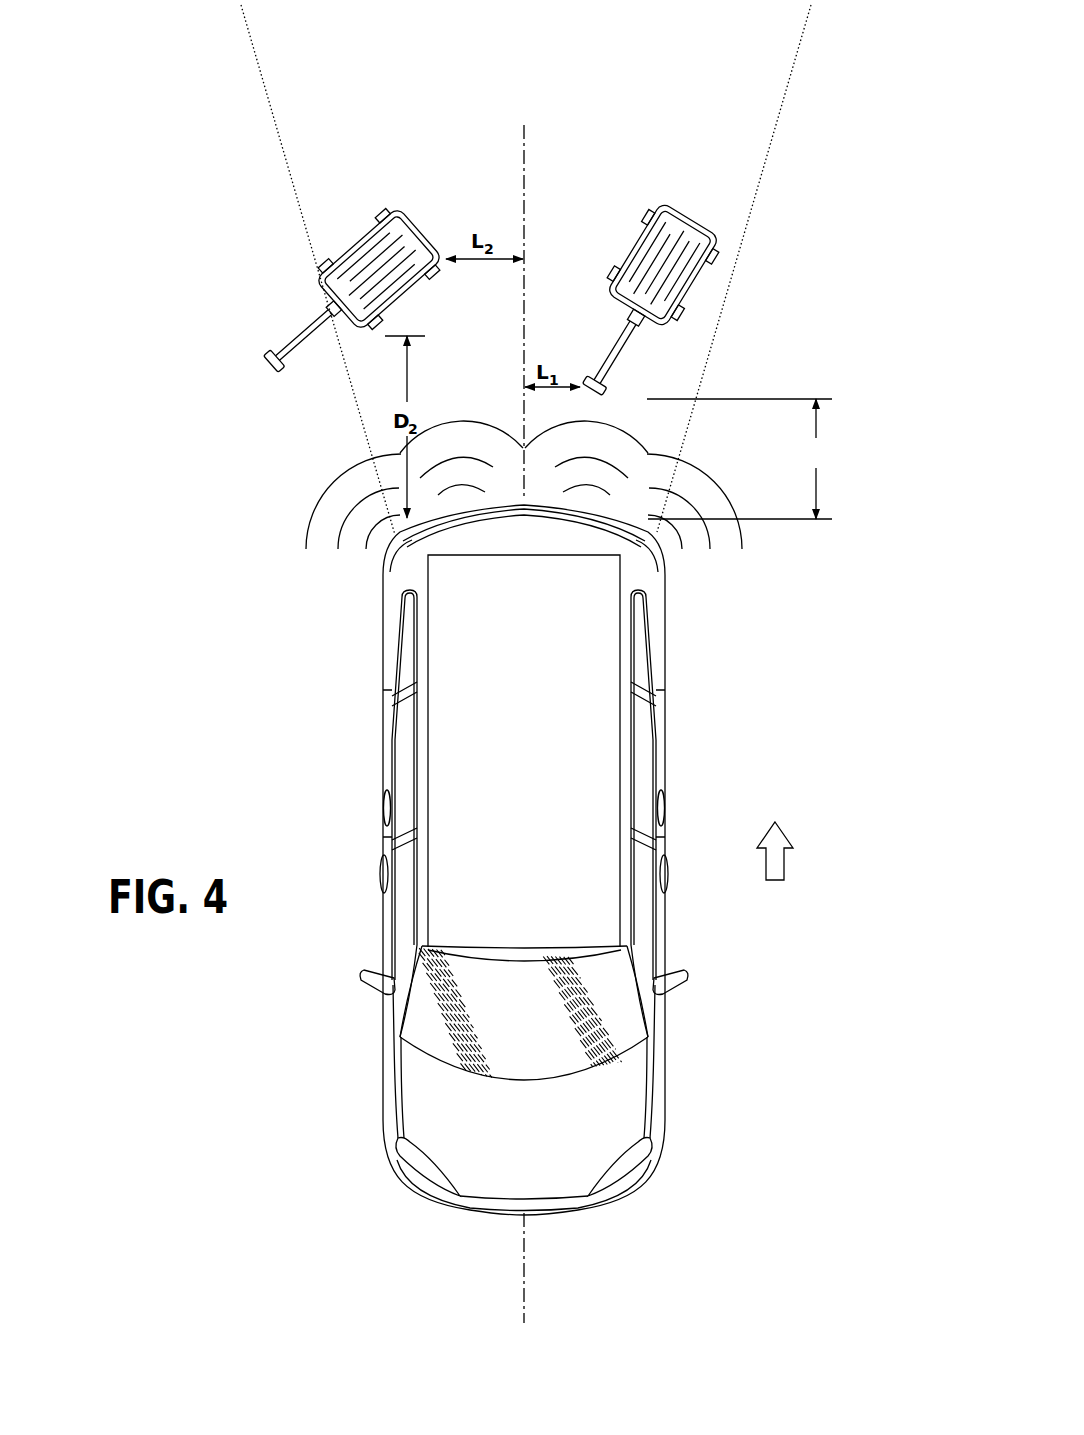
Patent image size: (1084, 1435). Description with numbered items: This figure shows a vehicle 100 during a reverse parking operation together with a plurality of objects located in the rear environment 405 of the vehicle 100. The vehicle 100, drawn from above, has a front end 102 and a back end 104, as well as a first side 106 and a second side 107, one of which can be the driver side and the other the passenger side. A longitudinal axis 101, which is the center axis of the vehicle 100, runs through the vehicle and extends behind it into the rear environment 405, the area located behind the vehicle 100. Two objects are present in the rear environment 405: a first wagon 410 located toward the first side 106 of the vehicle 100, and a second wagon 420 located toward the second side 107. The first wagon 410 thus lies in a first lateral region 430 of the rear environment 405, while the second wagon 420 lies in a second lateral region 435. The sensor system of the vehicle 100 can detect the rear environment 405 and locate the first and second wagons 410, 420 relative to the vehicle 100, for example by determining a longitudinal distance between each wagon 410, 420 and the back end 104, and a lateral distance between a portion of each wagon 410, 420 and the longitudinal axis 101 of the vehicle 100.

The vehicle 100 is at (657, 1208).
The longitudinal axis 101 is at (524, 1262).
The front end 102 is at (552, 1228).
The back end 104 is at (517, 497).
The first side 106 is at (682, 882).
The second side 107 is at (365, 769).
The rear environment 405 is at (719, 368).
The first wagon 410 is at (695, 290).
The second wagon 420 is at (354, 242).
The first lateral region 430 is at (687, 150).
The second lateral region 435 is at (351, 150).